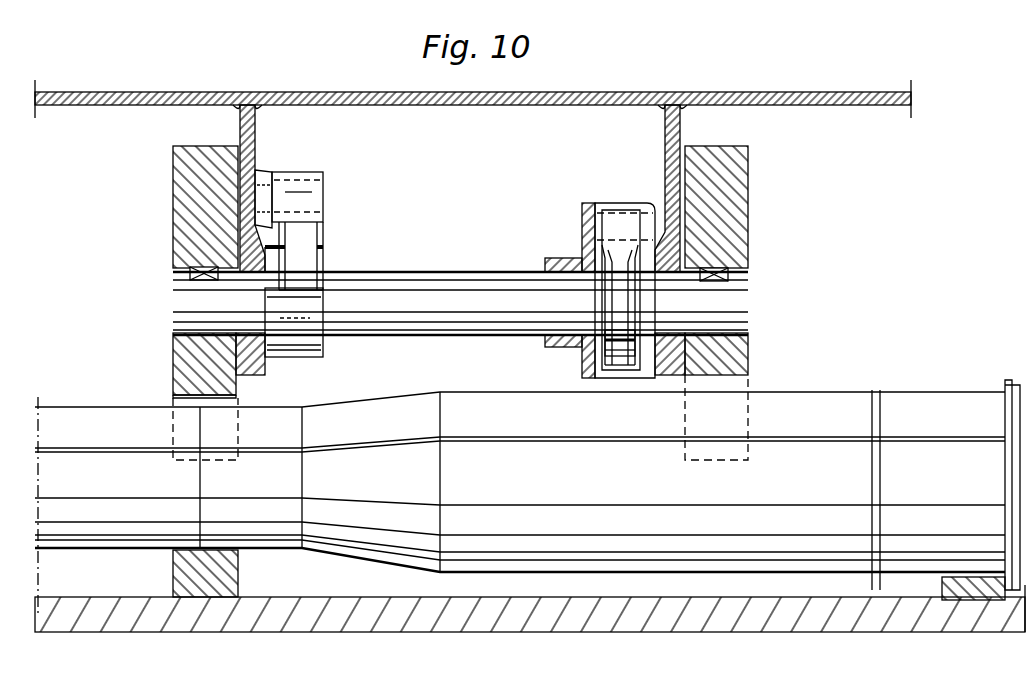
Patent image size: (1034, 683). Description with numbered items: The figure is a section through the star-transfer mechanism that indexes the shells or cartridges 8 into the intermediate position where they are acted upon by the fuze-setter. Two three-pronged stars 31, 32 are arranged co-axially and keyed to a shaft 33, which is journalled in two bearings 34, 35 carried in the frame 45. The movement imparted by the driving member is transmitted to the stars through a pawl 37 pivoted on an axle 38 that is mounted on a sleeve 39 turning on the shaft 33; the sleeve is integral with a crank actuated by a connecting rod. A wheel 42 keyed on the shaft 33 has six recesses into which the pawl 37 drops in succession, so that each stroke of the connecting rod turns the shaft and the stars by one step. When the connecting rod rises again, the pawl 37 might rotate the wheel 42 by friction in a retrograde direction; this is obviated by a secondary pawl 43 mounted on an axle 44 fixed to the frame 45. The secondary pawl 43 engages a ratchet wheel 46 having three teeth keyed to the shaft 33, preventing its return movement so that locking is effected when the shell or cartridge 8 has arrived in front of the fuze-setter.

The cartridge 8 is at (822, 400).
The three-pronged star 31 is at (175, 373).
The three-pronged star 32 is at (738, 177).
The shaft 33 is at (458, 318).
The bearing 34 is at (252, 365).
The bearing 35 is at (672, 365).
The pawl 37 is at (618, 262).
The axle 38 is at (588, 222).
The sleeve 39 is at (646, 207).
The wheel 42 is at (605, 345).
The secondary pawl 43 is at (300, 240).
The axle 44 is at (320, 178).
The frame 45 is at (266, 174).
The ratchet wheel 46 is at (312, 312).